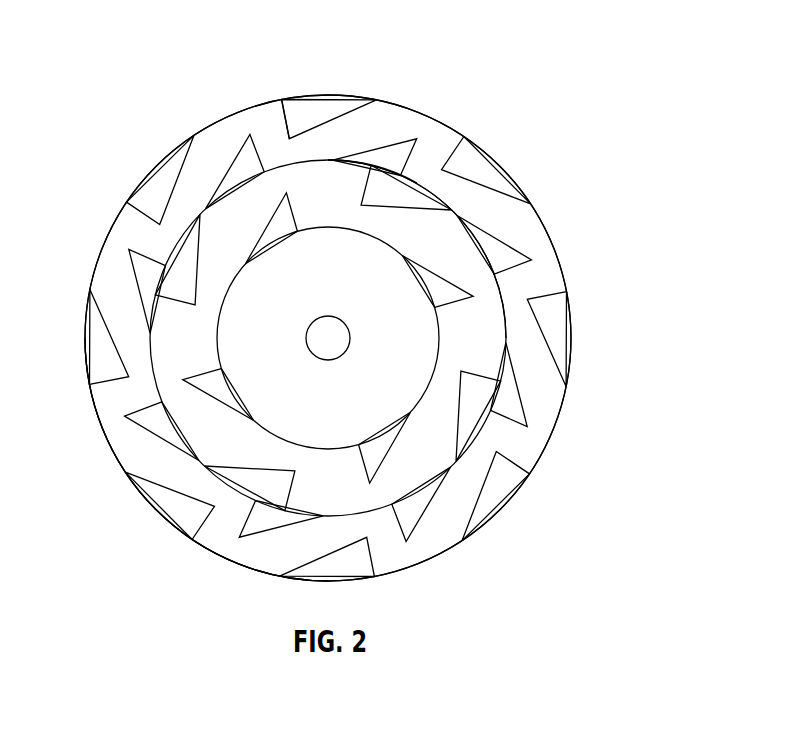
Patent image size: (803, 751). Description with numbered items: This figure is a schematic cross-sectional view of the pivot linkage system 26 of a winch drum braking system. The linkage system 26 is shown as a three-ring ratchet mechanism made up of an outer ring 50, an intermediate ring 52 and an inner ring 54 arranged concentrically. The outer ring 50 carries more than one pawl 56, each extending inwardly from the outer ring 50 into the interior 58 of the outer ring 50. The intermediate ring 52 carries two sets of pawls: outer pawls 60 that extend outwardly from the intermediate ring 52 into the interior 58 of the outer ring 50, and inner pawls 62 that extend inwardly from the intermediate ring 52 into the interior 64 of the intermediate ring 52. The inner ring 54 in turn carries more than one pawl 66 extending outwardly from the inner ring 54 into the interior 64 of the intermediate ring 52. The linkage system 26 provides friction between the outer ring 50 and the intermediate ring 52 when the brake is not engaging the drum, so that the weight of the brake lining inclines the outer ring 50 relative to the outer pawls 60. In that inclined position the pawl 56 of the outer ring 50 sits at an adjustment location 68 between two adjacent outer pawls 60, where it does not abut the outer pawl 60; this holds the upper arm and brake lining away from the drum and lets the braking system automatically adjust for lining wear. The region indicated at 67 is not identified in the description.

The linkage system 26 is at (604, 81).
The outer ring 50 is at (101, 248).
The intermediate ring 52 is at (372, 515).
The inner ring 54 is at (390, 242).
The pawl 56 is at (308, 107).
The interior 58 is at (118, 443).
The outer pawl 60 is at (240, 162).
The inner pawl 62 is at (287, 482).
The interior 64 is at (490, 303).
The pawl 66 is at (430, 303).
The outer annular passage 67 is at (360, 126).
The adjustment location 68 is at (283, 121).